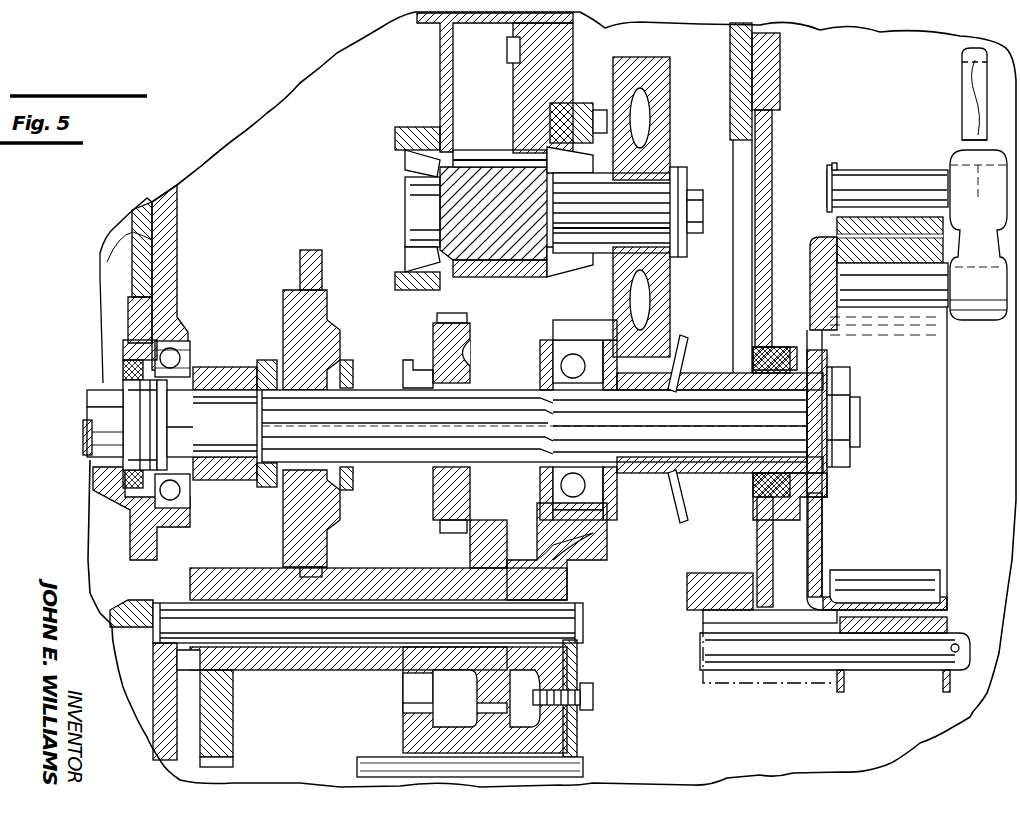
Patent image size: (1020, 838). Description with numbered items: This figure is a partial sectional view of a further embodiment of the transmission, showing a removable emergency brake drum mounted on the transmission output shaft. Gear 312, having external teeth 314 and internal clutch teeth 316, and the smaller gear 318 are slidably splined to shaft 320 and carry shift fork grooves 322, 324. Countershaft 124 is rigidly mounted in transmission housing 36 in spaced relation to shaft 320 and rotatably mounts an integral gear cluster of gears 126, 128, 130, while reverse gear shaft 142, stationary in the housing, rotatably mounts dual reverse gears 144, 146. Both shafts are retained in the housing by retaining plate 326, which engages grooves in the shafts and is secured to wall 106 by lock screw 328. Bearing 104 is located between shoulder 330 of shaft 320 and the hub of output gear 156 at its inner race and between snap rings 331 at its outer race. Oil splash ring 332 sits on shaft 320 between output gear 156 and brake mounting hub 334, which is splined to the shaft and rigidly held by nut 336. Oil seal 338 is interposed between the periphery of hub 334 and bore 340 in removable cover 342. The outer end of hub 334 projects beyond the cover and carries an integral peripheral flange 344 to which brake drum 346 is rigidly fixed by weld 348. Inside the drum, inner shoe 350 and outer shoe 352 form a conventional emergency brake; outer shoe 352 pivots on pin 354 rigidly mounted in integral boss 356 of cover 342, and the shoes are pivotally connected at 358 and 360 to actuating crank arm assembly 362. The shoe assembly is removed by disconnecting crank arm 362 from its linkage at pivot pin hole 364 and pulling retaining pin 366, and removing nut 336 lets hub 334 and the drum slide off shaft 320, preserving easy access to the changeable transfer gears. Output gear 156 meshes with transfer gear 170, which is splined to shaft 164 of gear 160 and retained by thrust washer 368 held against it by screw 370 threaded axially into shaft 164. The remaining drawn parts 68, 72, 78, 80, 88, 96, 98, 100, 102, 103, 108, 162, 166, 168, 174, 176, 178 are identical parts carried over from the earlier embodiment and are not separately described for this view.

The transmission housing 36 is at (576, 556).
The housing wall 68 is at (132, 237).
The housing wall 72 is at (178, 212).
The shaft end 78 is at (90, 446).
The bearing housing 80 is at (165, 500).
The housing flange 88 is at (140, 540).
The bearing seal 96 is at (140, 368).
The hub 98 is at (130, 400).
The shaft collar 100 is at (110, 425).
The shaft sleeve 102 is at (228, 367).
The input shaft 103 is at (250, 422).
The bearing 104 is at (605, 485).
The wall 106 is at (568, 574).
The housing wall 108 is at (580, 532).
The countershaft 124 is at (400, 596).
The gear 126 is at (268, 750).
The gear 128 is at (487, 522).
The gear 130 is at (338, 688).
The reverse gear shaft 142 is at (357, 768).
The reverse gear 144 is at (485, 698).
The reverse gear 146 is at (403, 709).
The transmission output gear 156 is at (674, 490).
The gear 160 is at (480, 277).
The clutch hub 162 is at (420, 212).
The shaft 164 is at (586, 200).
The roller bearing 166 is at (418, 160).
The roller bearing 168 is at (553, 280).
The transfer gear 170 is at (668, 284).
The housing block 174 is at (567, 108).
The bolt 176 is at (600, 110).
The splines 178 is at (613, 235).
The gear 312 is at (329, 310).
The external teeth 314 is at (312, 283).
The internal clutch teeth 316 is at (268, 490).
The gear 318 is at (452, 324).
The shaft 320 is at (508, 378).
The shift fork groove 322 is at (341, 360).
The shift fork groove 324 is at (408, 368).
The retaining plate 326 is at (578, 738).
The lock screw 328 is at (594, 690).
The shoulder 330 is at (546, 360).
The snap rings 331 is at (597, 514).
The oil splash ring 332 is at (684, 340).
The brake mounting hub 334 is at (708, 523).
The nut 336 is at (843, 386).
The oil seal 338 is at (820, 522).
The bore 340 is at (781, 347).
The cover 342 is at (773, 141).
The peripheral flange 344 is at (828, 488).
The brake drum 346 is at (845, 600).
The weld 348 is at (823, 520).
The inner shoe 350 is at (812, 262).
The outer shoe 352 is at (838, 232).
The pin 354 is at (863, 668).
The boss 356 is at (770, 685).
The pivotal connection 358 is at (832, 321).
The pivotal connection 360 is at (880, 170).
The actuating crank arm assembly 362 is at (965, 117).
The pivot pin hole 364 is at (963, 76).
The retaining pin 366 is at (958, 644).
The thrust washer 368 is at (679, 168).
The screw 370 is at (692, 190).